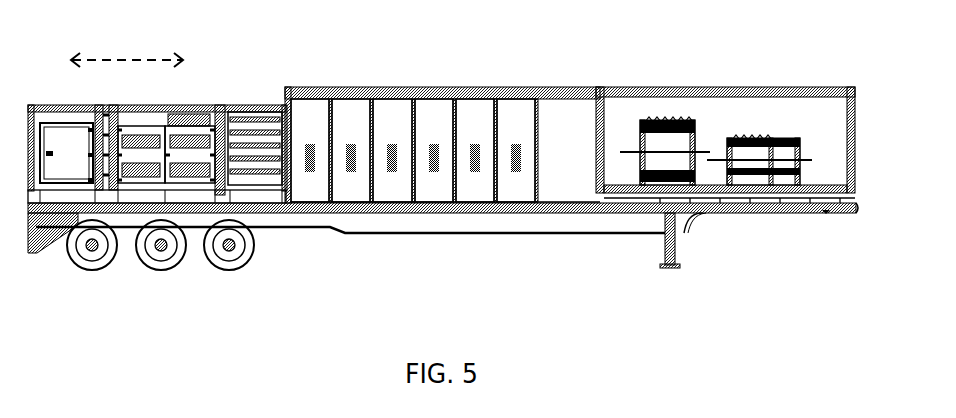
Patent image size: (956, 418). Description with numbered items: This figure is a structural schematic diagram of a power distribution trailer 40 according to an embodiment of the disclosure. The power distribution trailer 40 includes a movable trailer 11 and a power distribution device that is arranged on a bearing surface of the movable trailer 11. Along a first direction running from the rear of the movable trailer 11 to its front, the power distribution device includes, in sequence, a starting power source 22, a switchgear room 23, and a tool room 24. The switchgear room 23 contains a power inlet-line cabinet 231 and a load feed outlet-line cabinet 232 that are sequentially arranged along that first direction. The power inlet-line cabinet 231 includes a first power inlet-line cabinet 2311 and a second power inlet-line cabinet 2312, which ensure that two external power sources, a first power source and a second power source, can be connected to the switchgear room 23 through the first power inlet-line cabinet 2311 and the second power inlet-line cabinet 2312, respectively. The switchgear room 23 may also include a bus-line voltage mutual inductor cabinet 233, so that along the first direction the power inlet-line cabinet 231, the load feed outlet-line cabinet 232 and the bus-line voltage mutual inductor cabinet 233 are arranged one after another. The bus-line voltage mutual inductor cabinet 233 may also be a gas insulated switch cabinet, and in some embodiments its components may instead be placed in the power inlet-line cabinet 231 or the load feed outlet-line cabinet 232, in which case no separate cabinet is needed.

The power distribution trailer 40 is at (418, 275).
The movable trailer 11 is at (70, 218).
The starting power source 22 is at (215, 108).
The switchgear room 23 is at (458, 88).
The power inlet-line cabinet 231 is at (336, 115).
The first power inlet-line cabinet 2311 is at (307, 108).
The second power inlet-line cabinet 2312 is at (345, 133).
The load feed outlet-line cabinet 232 is at (430, 112).
The bus-line voltage mutual inductor cabinet 233 is at (522, 100).
The tool room 24 is at (737, 110).